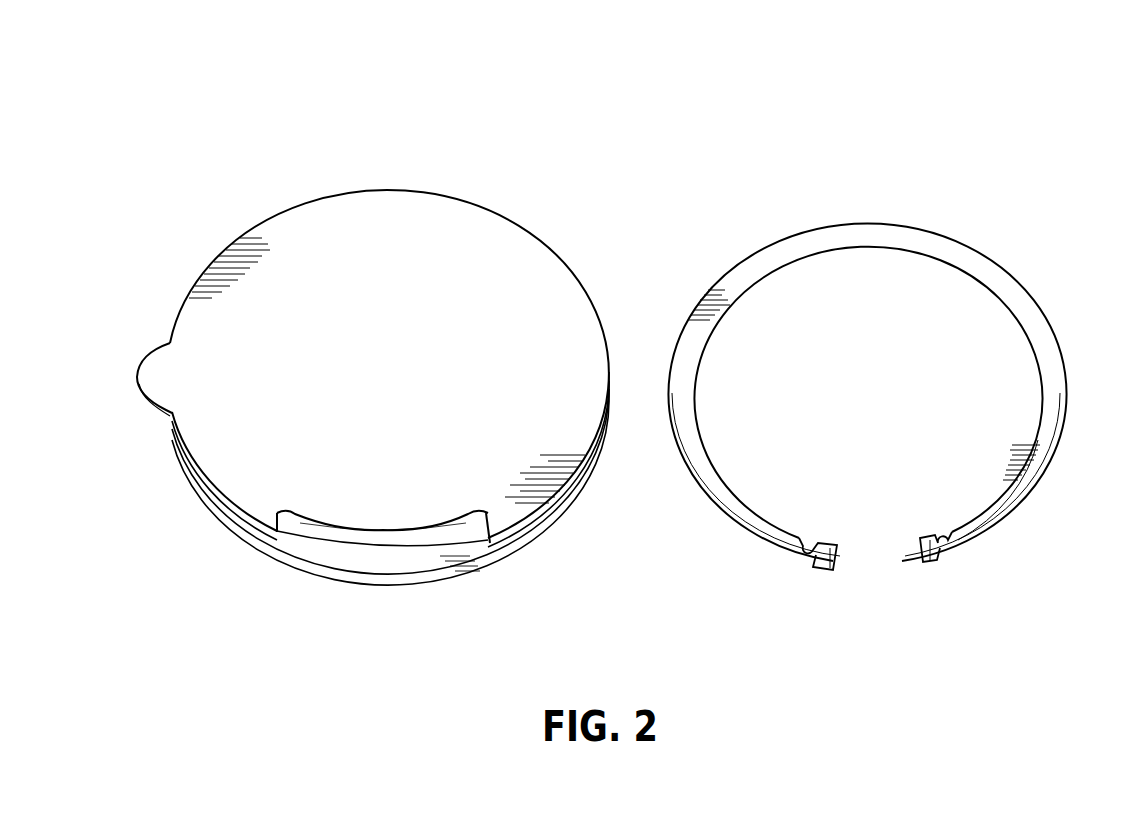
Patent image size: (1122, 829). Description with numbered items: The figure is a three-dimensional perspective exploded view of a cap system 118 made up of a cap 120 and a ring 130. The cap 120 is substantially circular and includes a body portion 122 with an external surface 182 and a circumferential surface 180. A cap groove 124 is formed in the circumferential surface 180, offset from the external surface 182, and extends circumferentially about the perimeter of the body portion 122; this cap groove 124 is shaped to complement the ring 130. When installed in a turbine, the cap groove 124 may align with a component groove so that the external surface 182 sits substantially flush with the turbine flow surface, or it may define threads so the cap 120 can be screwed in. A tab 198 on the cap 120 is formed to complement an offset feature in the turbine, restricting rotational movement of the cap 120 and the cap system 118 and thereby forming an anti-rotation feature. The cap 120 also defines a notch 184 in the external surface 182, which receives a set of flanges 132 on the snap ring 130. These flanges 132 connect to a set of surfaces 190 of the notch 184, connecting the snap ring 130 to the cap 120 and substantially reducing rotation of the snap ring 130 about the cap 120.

The cap system 118 is at (854, 359).
The cap 120 is at (334, 339).
The body portion 122 is at (275, 214).
The cap groove 124 is at (268, 536).
The ring 130 is at (894, 442).
The set of flanges 132 is at (930, 565).
The circumferential surface 180 is at (154, 464).
The external surface 182 is at (408, 366).
The notch 184 is at (442, 562).
The set of surfaces 190 is at (277, 516).
The tab 198 is at (152, 353).